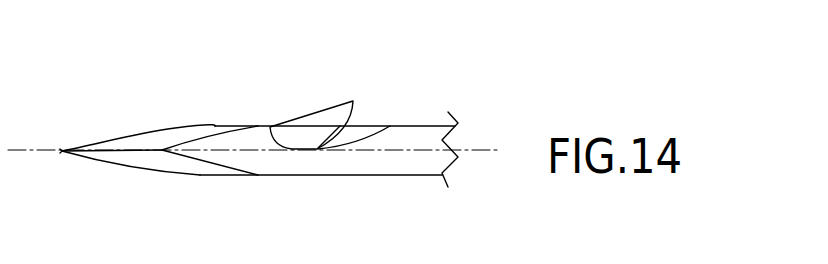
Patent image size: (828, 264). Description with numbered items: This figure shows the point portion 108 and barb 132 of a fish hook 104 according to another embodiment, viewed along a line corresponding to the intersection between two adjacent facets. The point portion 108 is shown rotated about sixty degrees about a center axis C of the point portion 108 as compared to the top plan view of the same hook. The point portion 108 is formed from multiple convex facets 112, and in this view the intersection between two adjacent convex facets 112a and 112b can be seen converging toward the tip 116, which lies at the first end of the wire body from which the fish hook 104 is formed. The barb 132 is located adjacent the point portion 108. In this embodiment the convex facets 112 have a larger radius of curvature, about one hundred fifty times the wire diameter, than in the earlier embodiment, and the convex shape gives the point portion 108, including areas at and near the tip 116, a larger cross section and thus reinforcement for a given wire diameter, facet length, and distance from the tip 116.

The fish hook 104 is at (407, 125).
The point portion 108 is at (153, 130).
The convex facets 112 is at (188, 141).
The first convex facet 112a is at (108, 143).
The second convex facet 112b is at (156, 170).
The tip 116 is at (62, 152).
The barb 132 is at (318, 122).
The center axis C is at (480, 150).